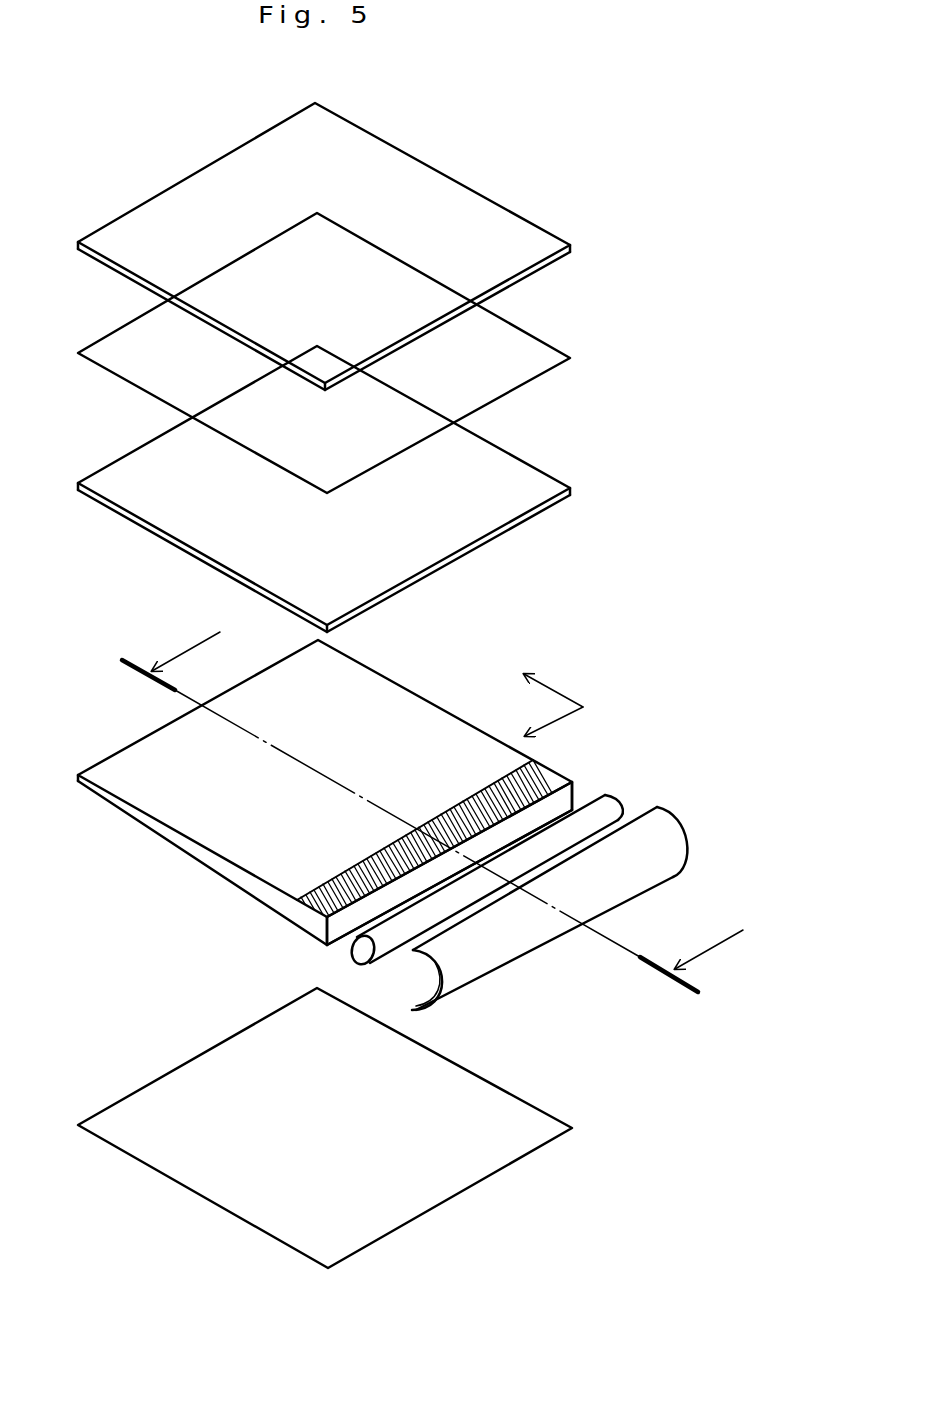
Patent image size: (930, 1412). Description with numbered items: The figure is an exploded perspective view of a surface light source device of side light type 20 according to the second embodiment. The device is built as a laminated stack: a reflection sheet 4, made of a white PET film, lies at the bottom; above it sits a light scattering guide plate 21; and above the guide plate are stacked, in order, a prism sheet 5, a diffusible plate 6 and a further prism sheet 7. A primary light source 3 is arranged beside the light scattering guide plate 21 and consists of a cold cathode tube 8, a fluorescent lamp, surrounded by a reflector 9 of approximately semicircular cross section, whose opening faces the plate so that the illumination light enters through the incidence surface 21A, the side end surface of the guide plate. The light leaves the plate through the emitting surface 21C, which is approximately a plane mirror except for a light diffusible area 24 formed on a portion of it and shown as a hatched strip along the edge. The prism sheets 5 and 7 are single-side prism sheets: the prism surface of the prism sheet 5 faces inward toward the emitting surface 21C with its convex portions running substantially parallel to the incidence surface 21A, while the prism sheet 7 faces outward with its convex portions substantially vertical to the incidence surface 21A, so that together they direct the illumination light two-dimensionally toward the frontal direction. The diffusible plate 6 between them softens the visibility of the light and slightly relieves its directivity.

The primary light source 3 is at (445, 876).
The reflection sheet 4 is at (393, 1213).
The prism sheet 5 is at (472, 537).
The diffusible plate 6 is at (490, 360).
The prism sheet 7 is at (492, 223).
The cold cathode tube 8 is at (390, 940).
The reflector 9 is at (523, 937).
The surface light source device of side light type 20 is at (60, 1319).
The light scattering guide plate 21 is at (382, 787).
The incidence surface 21A is at (532, 813).
The emitting surface 21C is at (447, 730).
The light diffusible area 24 is at (323, 880).